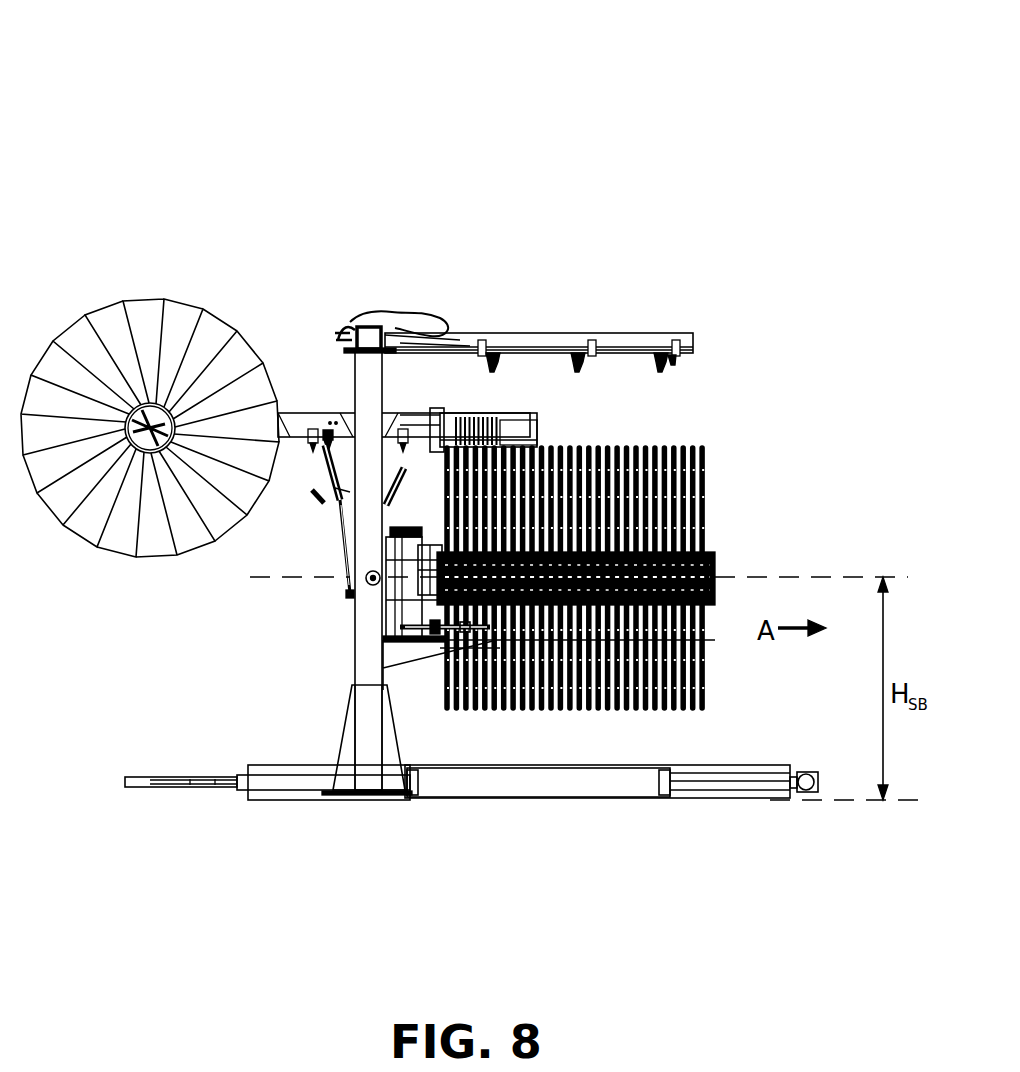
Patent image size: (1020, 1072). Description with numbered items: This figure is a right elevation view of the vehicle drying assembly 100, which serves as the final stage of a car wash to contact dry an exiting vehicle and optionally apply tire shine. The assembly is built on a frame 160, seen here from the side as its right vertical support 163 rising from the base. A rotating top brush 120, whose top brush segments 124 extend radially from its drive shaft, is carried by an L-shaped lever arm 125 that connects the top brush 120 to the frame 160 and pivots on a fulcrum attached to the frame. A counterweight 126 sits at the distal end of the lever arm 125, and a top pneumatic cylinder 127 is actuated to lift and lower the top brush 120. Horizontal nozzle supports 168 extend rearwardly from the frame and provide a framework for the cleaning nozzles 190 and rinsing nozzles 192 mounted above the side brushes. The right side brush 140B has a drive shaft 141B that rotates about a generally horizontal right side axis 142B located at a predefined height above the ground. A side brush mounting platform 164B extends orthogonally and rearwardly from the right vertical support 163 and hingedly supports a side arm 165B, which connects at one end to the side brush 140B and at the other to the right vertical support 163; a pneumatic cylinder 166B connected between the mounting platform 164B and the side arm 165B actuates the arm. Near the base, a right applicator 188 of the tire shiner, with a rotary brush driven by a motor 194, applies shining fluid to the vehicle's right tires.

The vehicle drying assembly 100 is at (124, 119).
The top brush 120 is at (198, 312).
The top brush segments 124 is at (90, 337).
The lever arm 125 is at (290, 425).
The counterweight 126 is at (482, 413).
The top pneumatic cylinder 127 is at (325, 470).
The frame 160 is at (377, 314).
The right vertical support 163 is at (370, 702).
The side brush mounting platform 164B is at (420, 648).
The side arm 165B is at (397, 594).
The pneumatic cylinder 166B is at (467, 648).
The horizontal nozzle supports 168 is at (621, 333).
The side brush 140B is at (712, 478).
The drive shaft 141B is at (435, 580).
The right side axis 142B is at (795, 577).
The right applicator 188 is at (771, 800).
The cleaning nozzles 190 is at (667, 368).
The rinsing nozzles 192 is at (657, 370).
The motor 194 is at (803, 772).